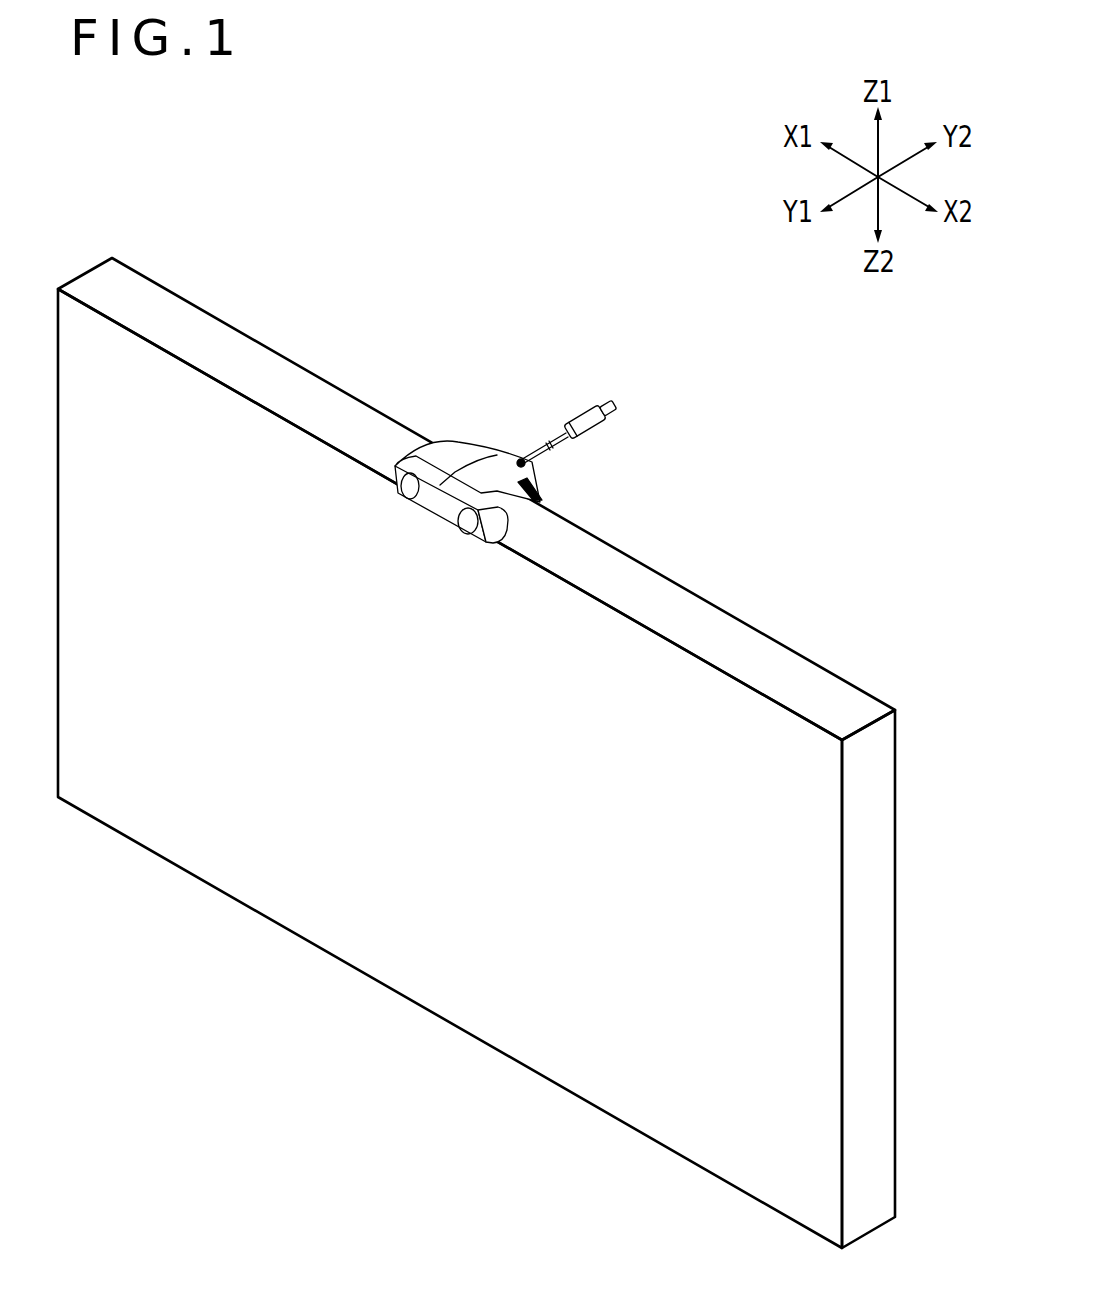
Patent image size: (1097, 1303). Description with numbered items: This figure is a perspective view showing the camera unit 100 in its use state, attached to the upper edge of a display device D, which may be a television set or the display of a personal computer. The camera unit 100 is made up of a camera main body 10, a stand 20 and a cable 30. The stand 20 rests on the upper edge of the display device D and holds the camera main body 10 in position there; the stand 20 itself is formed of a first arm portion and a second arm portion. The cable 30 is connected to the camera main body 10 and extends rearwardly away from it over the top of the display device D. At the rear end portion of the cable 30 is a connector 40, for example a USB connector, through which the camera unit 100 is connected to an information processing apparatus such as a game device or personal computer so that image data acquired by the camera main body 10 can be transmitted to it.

The camera unit 100 is at (519, 477).
The camera main body 10 is at (511, 526).
The stand 20 is at (455, 442).
The cable 30 is at (555, 428).
The connector 40 is at (605, 405).
The display device D is at (765, 627).